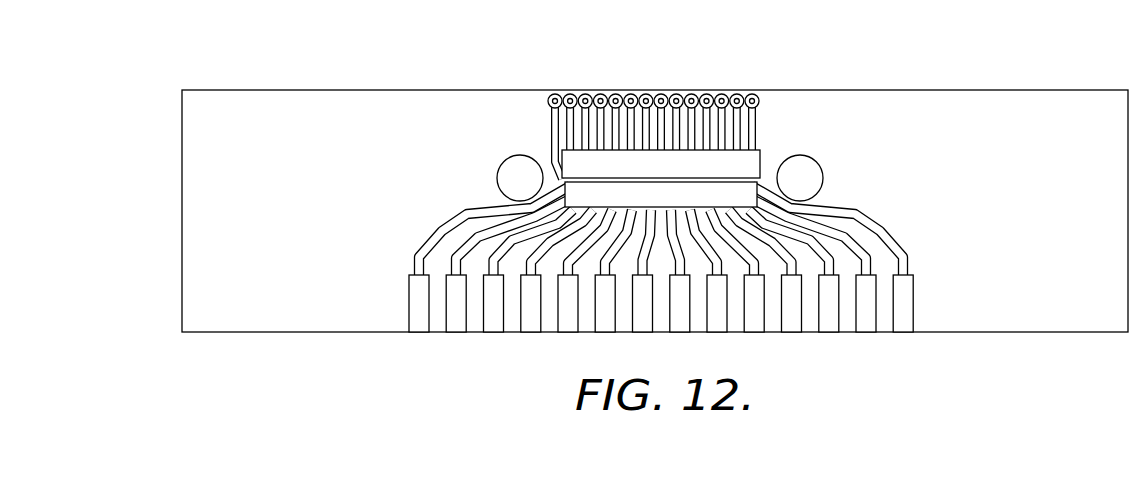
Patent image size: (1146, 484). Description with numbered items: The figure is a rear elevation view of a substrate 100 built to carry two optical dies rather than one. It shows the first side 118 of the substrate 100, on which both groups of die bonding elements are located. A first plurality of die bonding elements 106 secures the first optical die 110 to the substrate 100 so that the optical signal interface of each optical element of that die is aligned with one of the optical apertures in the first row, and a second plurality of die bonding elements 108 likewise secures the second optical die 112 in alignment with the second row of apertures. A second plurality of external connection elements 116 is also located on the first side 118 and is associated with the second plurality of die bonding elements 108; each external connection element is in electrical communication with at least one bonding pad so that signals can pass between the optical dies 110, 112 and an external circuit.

The substrate 100 is at (51, 89).
The first plurality of die bonding elements 106 is at (688, 107).
The second plurality of die bonding elements 108 is at (470, 248).
The first optical die 110 is at (748, 161).
The second optical die 112 is at (578, 193).
The second plurality of external connection elements 116 is at (925, 275).
The first side 118 is at (1082, 147).